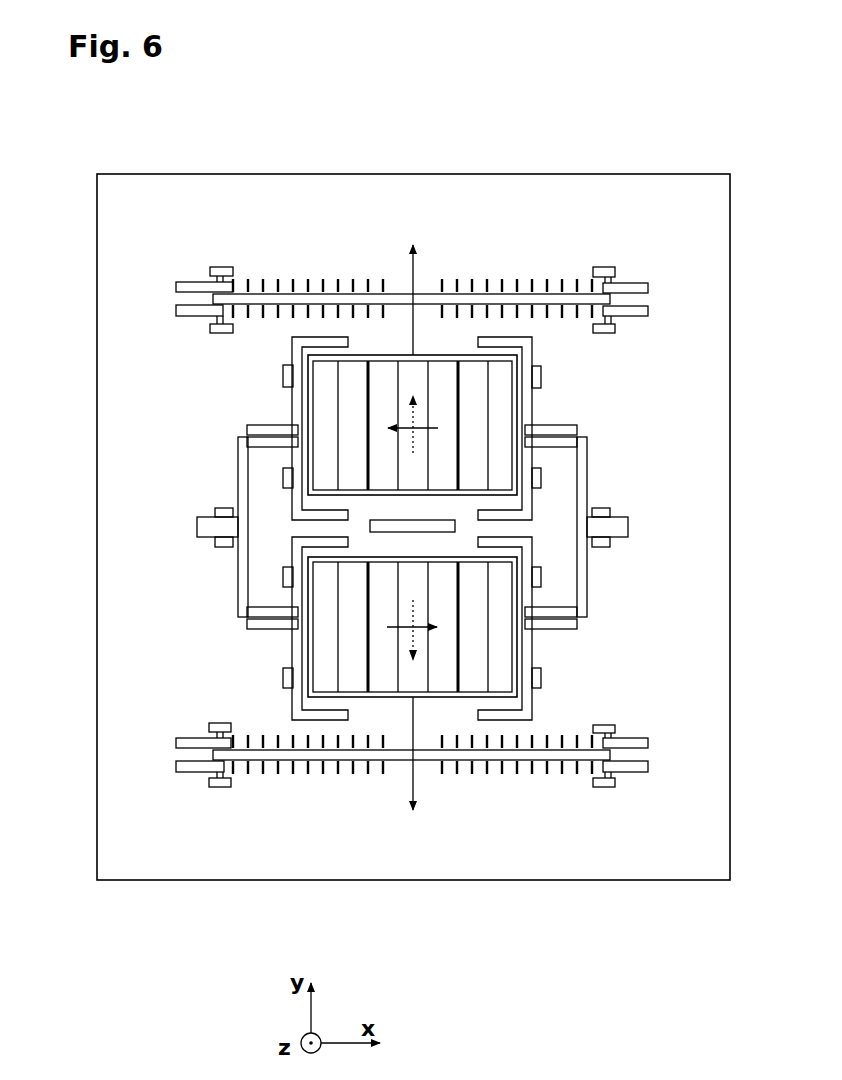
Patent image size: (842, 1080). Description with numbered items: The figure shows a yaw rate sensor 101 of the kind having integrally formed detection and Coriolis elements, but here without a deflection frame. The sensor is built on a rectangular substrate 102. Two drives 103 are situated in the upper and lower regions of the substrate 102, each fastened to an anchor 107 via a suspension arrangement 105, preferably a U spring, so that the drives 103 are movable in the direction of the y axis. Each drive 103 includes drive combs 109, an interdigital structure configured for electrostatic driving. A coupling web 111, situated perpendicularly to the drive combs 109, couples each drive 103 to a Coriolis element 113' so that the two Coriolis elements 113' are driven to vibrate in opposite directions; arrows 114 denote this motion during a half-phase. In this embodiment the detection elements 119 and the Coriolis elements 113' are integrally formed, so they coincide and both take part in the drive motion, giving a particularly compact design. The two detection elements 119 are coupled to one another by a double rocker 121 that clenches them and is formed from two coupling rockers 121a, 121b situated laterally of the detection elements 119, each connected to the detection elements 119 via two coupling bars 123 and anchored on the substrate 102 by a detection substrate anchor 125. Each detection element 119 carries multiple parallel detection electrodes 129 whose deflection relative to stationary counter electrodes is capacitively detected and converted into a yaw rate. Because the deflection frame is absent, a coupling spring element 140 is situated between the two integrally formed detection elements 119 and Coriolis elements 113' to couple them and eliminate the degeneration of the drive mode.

The yaw rate sensor 101 is at (745, 125).
The substrate 102 is at (730, 190).
The drive 103 is at (176, 287).
The suspension arrangement 105 is at (213, 297).
The anchor 107 is at (221, 266).
The drive comb 109 is at (310, 286).
The coupling web 111 is at (416, 322).
The Coriolis element 113' is at (464, 528).
The arrow 114 is at (414, 263).
The detection element 119 is at (496, 357).
The double rocker 121 is at (586, 470).
The coupling rocker 121a is at (237, 497).
The coupling rocker 121b is at (587, 563).
The coupling bar 123 is at (272, 440).
The detection substrate anchor 125 is at (205, 538).
The detection electrode 129 is at (487, 398).
The coupling spring element 140 is at (380, 520).